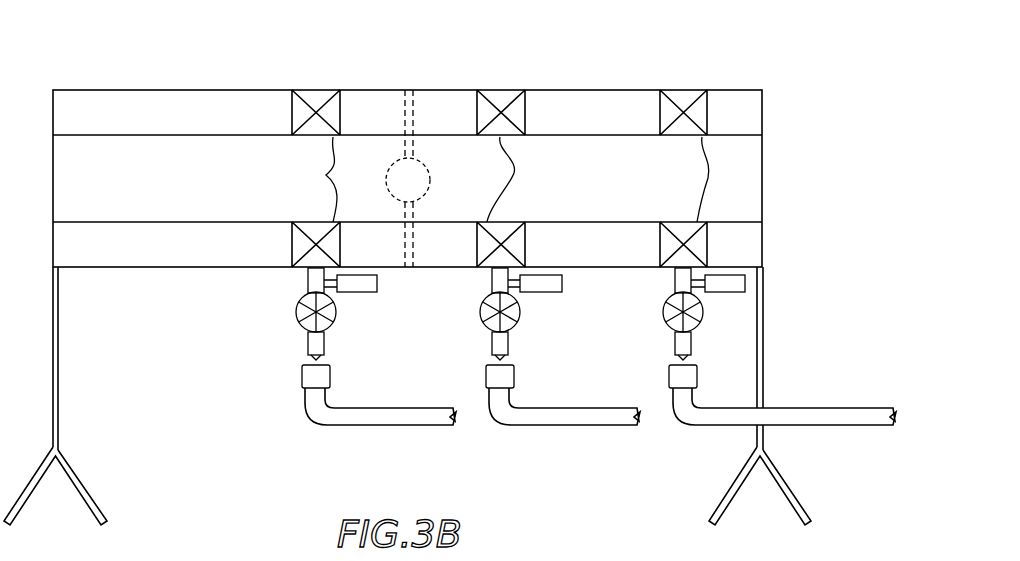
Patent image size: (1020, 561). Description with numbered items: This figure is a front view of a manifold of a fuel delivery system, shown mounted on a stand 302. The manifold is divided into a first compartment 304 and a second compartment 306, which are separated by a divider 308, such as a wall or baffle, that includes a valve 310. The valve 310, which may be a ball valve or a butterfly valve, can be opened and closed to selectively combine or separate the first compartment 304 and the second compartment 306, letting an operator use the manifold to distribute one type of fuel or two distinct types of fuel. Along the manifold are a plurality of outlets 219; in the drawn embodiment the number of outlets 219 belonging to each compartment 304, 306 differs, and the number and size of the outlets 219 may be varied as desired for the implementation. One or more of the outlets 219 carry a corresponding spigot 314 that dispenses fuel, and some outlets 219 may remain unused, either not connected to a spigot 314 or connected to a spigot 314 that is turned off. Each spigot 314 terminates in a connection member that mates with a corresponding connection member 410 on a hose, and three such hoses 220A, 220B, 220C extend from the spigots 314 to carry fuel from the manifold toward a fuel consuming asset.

The stand 302 is at (766, 318).
The first compartment 304 is at (237, 112).
The second compartment 306 is at (556, 107).
The divider 308 is at (400, 115).
The valve 310 is at (418, 160).
The outlets 219 is at (326, 175).
The spigot 314 is at (305, 283).
The connection member 410 is at (302, 378).
The hose 220A is at (850, 428).
The hose 220B is at (575, 430).
The hose 220C is at (385, 430).